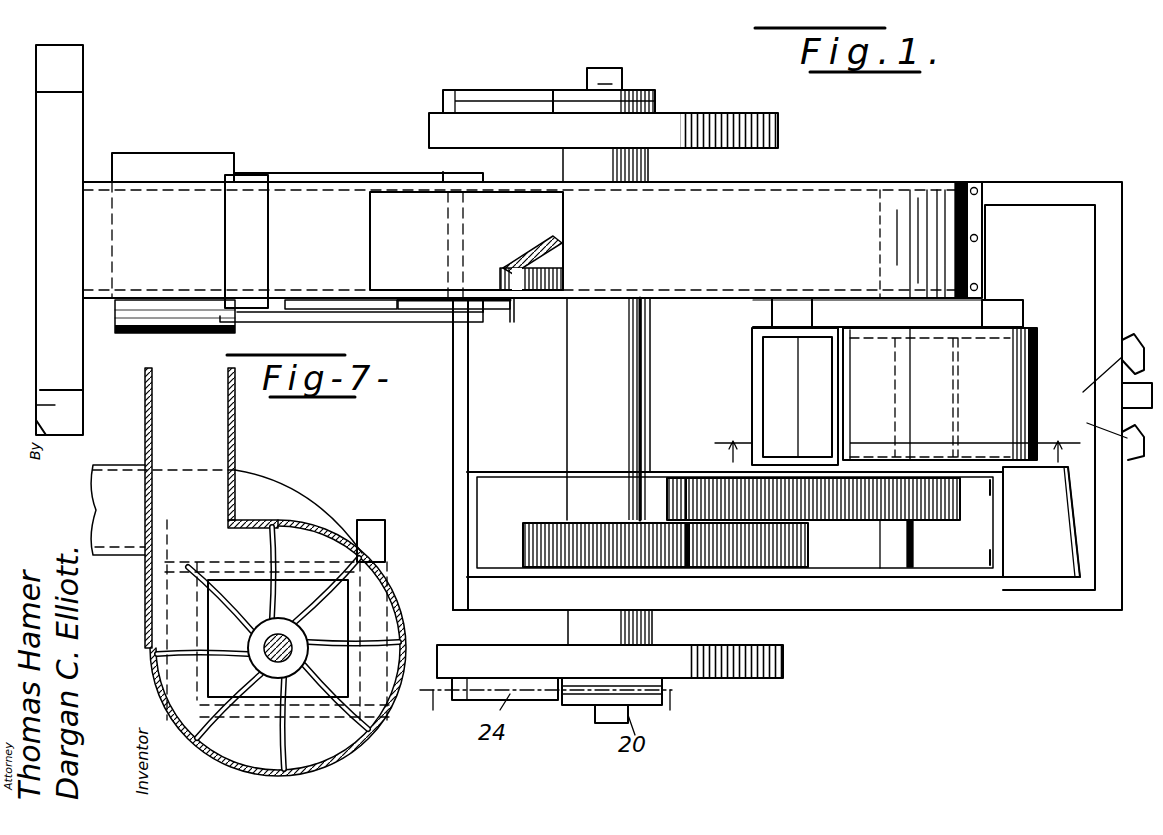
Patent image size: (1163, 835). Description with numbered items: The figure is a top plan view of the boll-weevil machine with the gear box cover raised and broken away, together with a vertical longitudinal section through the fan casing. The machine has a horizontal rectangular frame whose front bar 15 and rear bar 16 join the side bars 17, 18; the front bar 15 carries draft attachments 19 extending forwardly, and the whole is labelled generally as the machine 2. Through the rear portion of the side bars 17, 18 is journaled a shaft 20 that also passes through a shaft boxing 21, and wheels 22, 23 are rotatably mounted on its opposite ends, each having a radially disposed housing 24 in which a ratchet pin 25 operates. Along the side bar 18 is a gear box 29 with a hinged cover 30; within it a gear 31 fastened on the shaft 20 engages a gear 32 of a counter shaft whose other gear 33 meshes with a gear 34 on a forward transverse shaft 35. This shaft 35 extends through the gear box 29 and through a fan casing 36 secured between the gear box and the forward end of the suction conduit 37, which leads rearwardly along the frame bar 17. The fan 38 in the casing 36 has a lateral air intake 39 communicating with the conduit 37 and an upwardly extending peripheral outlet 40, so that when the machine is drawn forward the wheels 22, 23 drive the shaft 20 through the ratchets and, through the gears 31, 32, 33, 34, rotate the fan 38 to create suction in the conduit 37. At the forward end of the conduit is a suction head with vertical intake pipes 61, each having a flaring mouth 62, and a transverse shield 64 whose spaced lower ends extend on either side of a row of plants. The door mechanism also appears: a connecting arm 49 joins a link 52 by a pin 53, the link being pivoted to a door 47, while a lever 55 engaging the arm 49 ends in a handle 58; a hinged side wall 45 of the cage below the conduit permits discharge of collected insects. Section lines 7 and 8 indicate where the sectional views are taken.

In FIG. 1, the machine base 2 is at (36, 405).
In FIG. 1, the section line 7- 7 is at (896, 454).
In FIG. 1, the section line 8- 8 is at (547, 712).
In FIG. 1, the front bar 15 is at (1104, 362).
In FIG. 1, the rear bar 16 is at (460, 406).
In FIG. 1, the side bar 17 is at (1006, 192).
In FIG. 1, the side bar 18 is at (852, 598).
In FIG. 1, the draft attachments 19 is at (1128, 395).
In FIG. 1, the shaft 20 is at (624, 80).
In FIG. 1, the shaft boxing 21 is at (648, 379).
In FIG. 1, the wheel 22 is at (780, 130).
In FIG. 1, the wheel 23 is at (752, 672).
In FIG. 1, the housing 24 is at (493, 103).
In FIG. 1, the ratchet pin 25 is at (554, 100).
In FIG. 1, the gear box 29 is at (954, 582).
In FIG. 1, the hinged cover 30 is at (1058, 563).
In FIG. 1, the gear 31 is at (548, 540).
In FIG. 1, the gear 32 is at (735, 566).
In FIG. 1, the gear 33 is at (686, 496).
In FIG. 1, the gear 34 is at (873, 503).
In FIG. 1, the transverse shaft 35 is at (912, 552).
In FIG. 7, the transverse shaft 35 is at (284, 664).
In FIG. 1, the fan casing 36 is at (1020, 352).
In FIG. 7, the fan casing 36 is at (380, 730).
In FIG. 1, the suction conduit 37 is at (800, 216).
In FIG. 7, the suction conduit 37 is at (278, 497).
In FIG. 1, the fan 38 is at (796, 413).
In FIG. 7, the fan 38 is at (312, 758).
In FIG. 7, the lateral air intake 39 is at (346, 612).
In FIG. 1, the peripheral outlet 40 is at (752, 372).
In FIG. 7, the peripheral outlet 40 is at (166, 452).
In FIG. 1, the side wall 45 is at (364, 168).
In FIG. 1, the door 47 is at (466, 245).
In FIG. 1, the connecting arm 49 is at (486, 305).
In FIG. 1, the link 52 is at (566, 262).
In FIG. 1, the pin 53 is at (516, 300).
In FIG. 1, the lever 55 is at (398, 320).
In FIG. 1, the handle 58 is at (282, 323).
In FIG. 1, the intake pipe 61 is at (76, 104).
In FIG. 1, the flaring mouth 62 is at (85, 66).
In FIG. 1, the transverse shield 64 is at (150, 327).